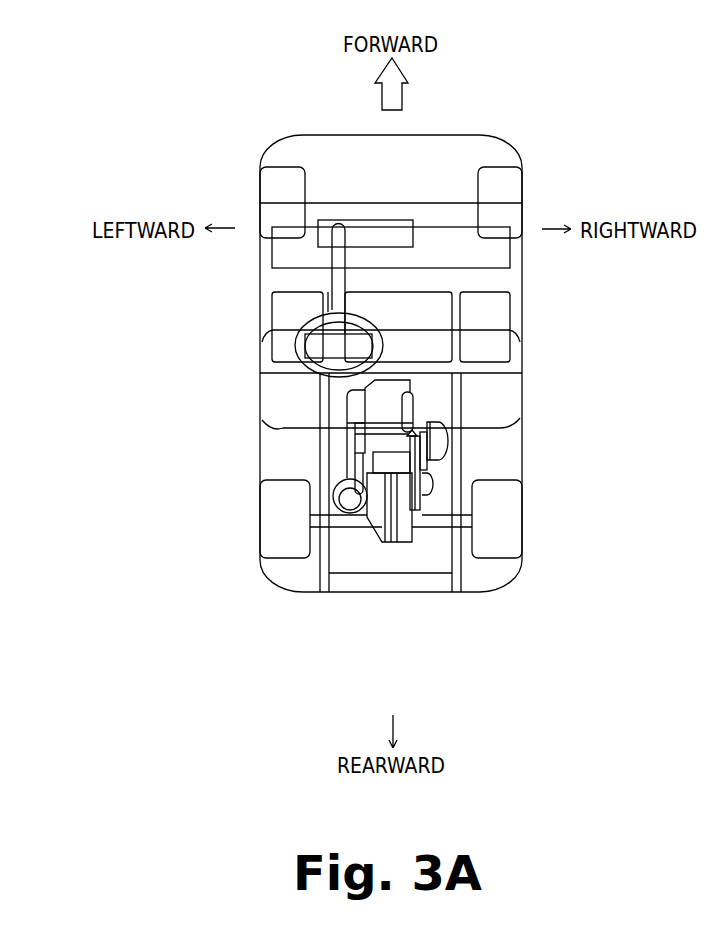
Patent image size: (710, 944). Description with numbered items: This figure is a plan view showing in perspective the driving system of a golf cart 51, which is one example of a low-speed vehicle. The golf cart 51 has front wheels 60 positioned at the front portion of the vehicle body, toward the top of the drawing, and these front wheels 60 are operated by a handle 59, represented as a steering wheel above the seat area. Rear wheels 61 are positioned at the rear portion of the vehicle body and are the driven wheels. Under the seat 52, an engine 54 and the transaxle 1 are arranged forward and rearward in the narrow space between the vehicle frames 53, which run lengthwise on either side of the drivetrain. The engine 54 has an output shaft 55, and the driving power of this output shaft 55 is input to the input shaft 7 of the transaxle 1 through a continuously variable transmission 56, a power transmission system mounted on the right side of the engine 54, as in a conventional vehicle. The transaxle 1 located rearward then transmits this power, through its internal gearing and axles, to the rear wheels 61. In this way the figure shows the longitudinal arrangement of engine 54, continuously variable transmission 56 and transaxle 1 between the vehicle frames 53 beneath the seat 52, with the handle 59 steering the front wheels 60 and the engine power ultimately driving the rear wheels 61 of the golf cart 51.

The transaxle 1 is at (403, 542).
The input shaft 7 is at (410, 527).
The golf cart 51 is at (558, 131).
The seat 52 is at (267, 437).
The vehicle frames 53 is at (317, 462).
The engine 54 is at (393, 385).
The output shaft 55 is at (419, 428).
The continuously variable transmission 56 is at (420, 468).
The handle 59 is at (310, 323).
The front wheels 60 is at (265, 180).
The rear wheels 61 is at (268, 540).